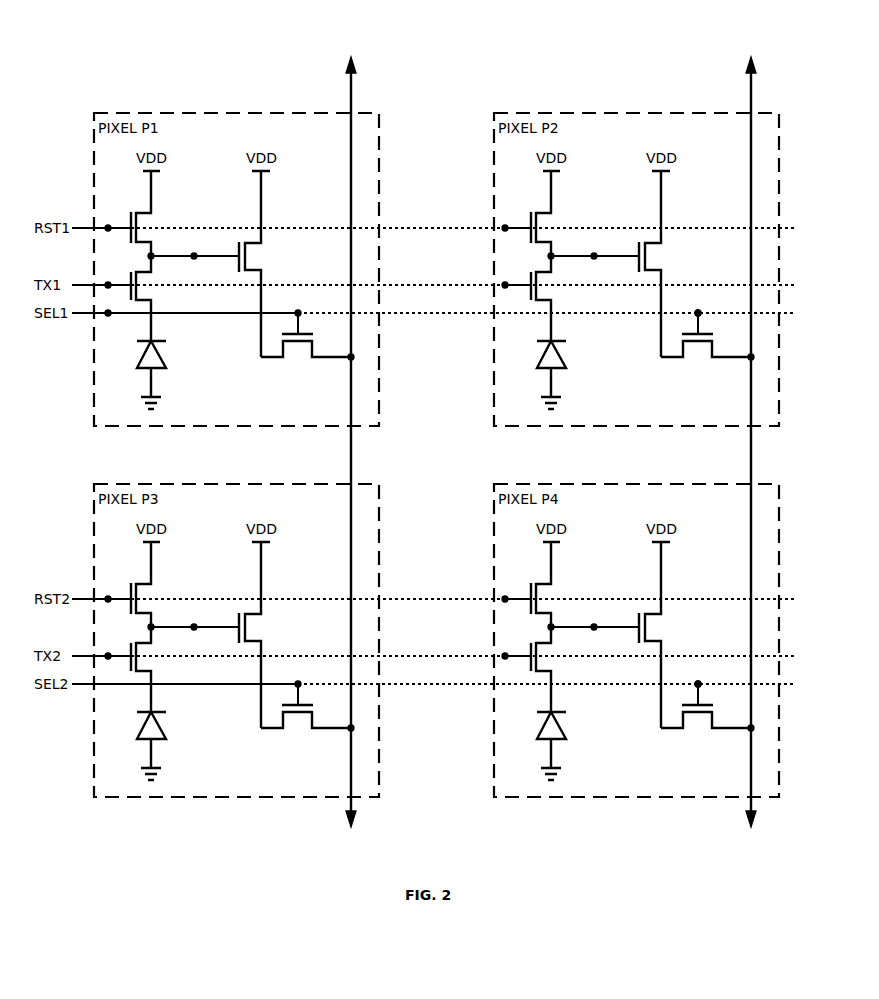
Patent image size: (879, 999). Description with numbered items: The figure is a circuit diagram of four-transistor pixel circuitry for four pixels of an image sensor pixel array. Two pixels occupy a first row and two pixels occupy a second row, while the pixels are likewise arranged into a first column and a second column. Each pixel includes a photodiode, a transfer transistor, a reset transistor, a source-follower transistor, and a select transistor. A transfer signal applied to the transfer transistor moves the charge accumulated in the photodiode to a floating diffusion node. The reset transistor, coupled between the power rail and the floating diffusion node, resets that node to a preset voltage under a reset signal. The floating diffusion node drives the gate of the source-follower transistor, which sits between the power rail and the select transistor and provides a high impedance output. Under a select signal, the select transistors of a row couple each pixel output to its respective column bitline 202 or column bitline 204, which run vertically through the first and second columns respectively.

The column bitline 202 is at (358, 58).
The column bitline 204 is at (744, 57).